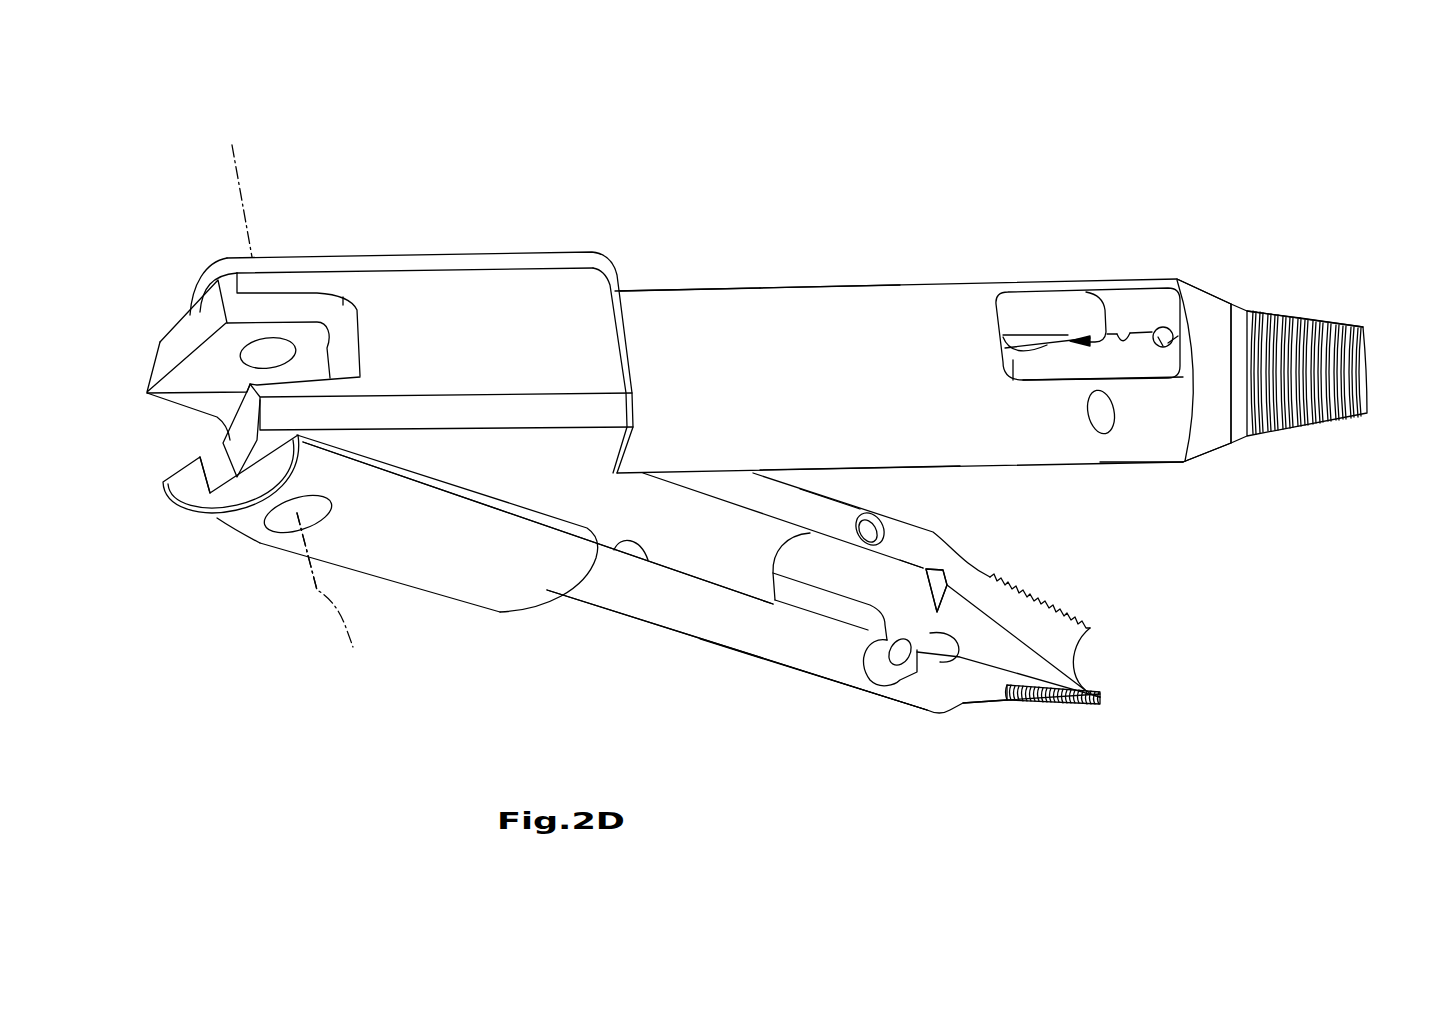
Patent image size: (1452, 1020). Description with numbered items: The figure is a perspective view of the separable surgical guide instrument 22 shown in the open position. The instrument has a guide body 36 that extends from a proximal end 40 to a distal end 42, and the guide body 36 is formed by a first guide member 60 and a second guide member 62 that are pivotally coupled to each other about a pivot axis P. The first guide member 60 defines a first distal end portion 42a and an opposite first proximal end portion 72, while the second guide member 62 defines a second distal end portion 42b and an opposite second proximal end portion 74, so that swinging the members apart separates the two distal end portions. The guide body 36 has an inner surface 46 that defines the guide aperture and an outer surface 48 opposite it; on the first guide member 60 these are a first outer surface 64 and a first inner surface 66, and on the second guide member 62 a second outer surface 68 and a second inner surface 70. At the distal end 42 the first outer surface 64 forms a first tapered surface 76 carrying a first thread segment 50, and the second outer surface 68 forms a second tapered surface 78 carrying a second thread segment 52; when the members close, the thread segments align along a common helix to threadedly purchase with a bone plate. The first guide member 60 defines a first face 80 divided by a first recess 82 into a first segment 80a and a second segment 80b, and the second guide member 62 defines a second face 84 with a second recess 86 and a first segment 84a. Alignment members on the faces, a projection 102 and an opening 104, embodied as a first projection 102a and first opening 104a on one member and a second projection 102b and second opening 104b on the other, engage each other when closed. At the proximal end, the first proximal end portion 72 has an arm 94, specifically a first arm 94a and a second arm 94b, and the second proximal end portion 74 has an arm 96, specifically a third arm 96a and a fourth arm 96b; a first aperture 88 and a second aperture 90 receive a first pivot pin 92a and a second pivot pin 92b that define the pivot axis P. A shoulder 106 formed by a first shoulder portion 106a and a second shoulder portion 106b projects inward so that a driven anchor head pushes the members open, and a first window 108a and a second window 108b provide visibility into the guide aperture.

The separable surgical guide instrument 22 is at (320, 163).
The guide body 36 is at (707, 287).
The proximal end 40 is at (371, 321).
The distal end 42 is at (1337, 344).
The first distal end portion 42a is at (1277, 317).
The second distal end portion 42b is at (1079, 722).
The inner surface 46 is at (655, 588).
The outer surface 48 is at (802, 312).
The first thread segment 50 is at (1320, 322).
The second thread segment 52 is at (1033, 703).
The first guide member 60 is at (665, 287).
The second guide member 62 is at (582, 564).
The first outer surface 64 is at (752, 327).
The first inner surface 66 is at (1152, 327).
The second outer surface 68 is at (773, 665).
The second inner surface 70 is at (613, 552).
The first proximal end portion 72 is at (228, 258).
The second proximal end portion 74 is at (230, 517).
The first tapered surface 76 is at (1330, 385).
The second tapered surface 78 is at (1077, 612).
The first face 80 is at (1087, 290).
The first segment of the first face 80a is at (1132, 330).
The second segment of the first face 80b is at (1127, 463).
The first recess 82 is at (1192, 430).
The second face 84 is at (936, 665).
The first segment of the second face 84a is at (958, 585).
The second recess 86 is at (700, 578).
The first aperture 88 is at (272, 340).
The second aperture 90 is at (327, 520).
The first pivot pin 92a is at (287, 517).
The second pivot pin 92b is at (277, 350).
The arm 94 is at (203, 274).
The first arm 94a is at (226, 440).
The second arm 94b is at (198, 290).
The arm 96 is at (250, 537).
The third arm 96a is at (223, 513).
The fourth arm 96b is at (163, 355).
The projection 102 is at (1003, 347).
The first projection 102a is at (1007, 349).
The second projection 102b is at (885, 668).
The opening 104 is at (885, 517).
The first opening 104a is at (1090, 430).
The second opening 104b is at (852, 514).
The shoulder 106 is at (915, 598).
The first shoulder portion 106a is at (1178, 334).
The second shoulder portion 106b is at (962, 600).
The first window 108a is at (1012, 380).
The second window 108b is at (826, 622).
The pivot axis P is at (326, 593).